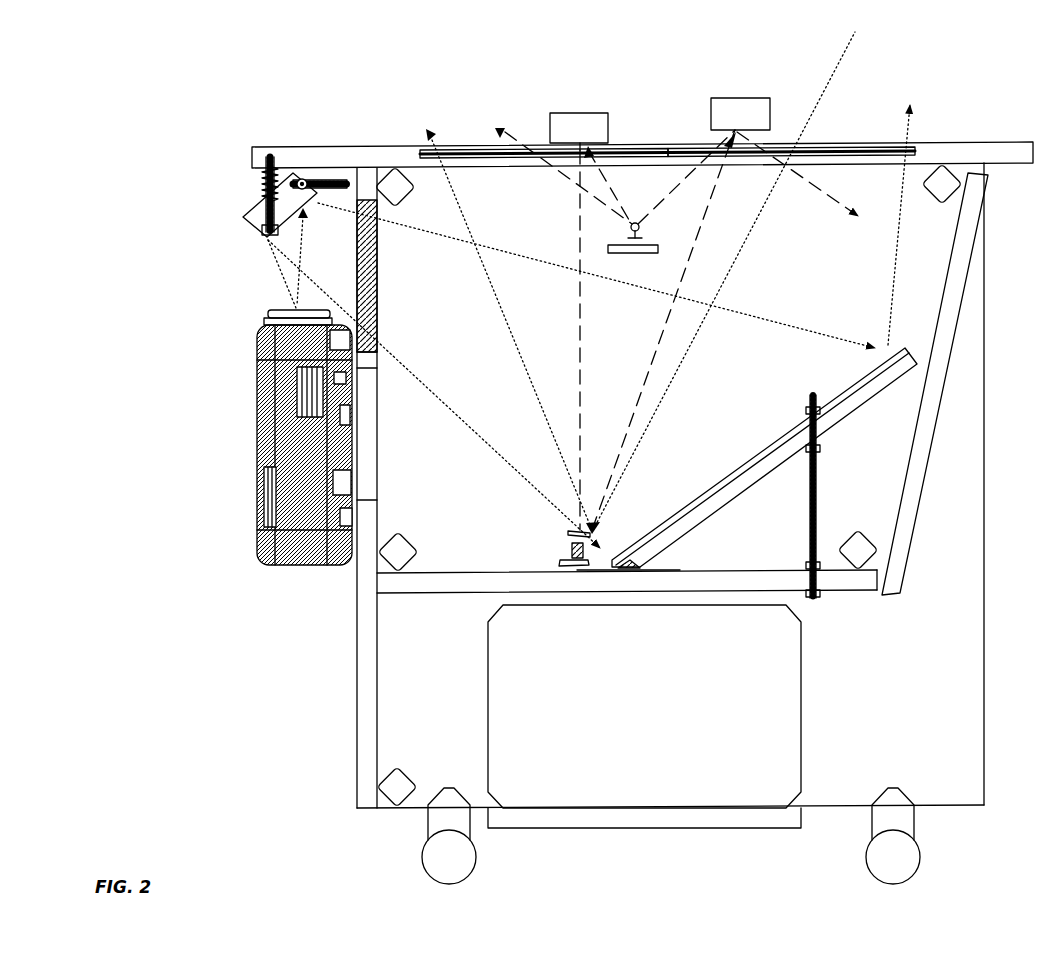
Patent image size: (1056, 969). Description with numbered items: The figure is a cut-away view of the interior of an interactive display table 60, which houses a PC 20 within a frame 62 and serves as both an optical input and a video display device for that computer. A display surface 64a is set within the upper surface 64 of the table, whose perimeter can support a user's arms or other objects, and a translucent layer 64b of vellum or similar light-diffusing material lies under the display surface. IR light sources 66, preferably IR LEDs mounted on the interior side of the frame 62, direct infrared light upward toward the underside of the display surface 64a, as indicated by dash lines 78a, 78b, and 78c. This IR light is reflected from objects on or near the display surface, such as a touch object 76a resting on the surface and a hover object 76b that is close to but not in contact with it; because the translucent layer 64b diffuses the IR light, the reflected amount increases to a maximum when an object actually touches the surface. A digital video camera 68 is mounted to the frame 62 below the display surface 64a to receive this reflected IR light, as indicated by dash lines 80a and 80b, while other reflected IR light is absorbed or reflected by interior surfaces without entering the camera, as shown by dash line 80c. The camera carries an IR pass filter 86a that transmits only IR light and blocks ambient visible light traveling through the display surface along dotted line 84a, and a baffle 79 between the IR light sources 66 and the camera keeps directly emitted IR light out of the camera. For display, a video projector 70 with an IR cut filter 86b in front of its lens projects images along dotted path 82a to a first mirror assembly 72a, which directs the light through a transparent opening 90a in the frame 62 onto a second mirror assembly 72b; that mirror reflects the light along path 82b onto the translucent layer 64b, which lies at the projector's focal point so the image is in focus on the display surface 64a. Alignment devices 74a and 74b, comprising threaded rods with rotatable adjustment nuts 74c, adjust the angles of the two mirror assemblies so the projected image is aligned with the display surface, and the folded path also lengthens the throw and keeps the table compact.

The PC 20 is at (802, 703).
The interactive display table 60 is at (252, 640).
The frame 62 is at (357, 703).
The upper surface 64 is at (385, 147).
The display surface 64a is at (462, 145).
The translucent layer 64b is at (834, 146).
The IR light sources 66 is at (628, 229).
The digital video camera 68 is at (570, 548).
The video projector 70 is at (255, 410).
The first mirror assembly 72a is at (256, 240).
The second mirror assembly 72b is at (738, 462).
The alignment device 74a is at (327, 182).
The alignment device 74b is at (821, 470).
The rotatable adjustment nuts 74c is at (260, 230).
The touch object 76a is at (566, 113).
The hover object 76b is at (730, 98).
The dash line 78a is at (556, 170).
The dash line 78b is at (612, 192).
The dash line 78c is at (690, 172).
The baffle 79 is at (636, 253).
The dash line 80a is at (578, 308).
The dash line 80b is at (656, 345).
The dash line 80c is at (826, 205).
The dotted path 82a is at (316, 280).
The path 82b is at (490, 275).
The dotted line 84a is at (848, 52).
The IR pass filter 86a is at (572, 531).
The IR cut filter 86b is at (268, 313).
The transparent opening 90a is at (378, 318).